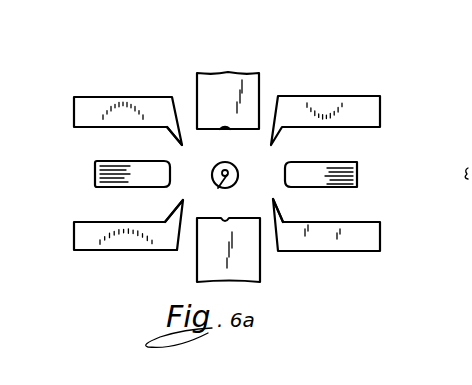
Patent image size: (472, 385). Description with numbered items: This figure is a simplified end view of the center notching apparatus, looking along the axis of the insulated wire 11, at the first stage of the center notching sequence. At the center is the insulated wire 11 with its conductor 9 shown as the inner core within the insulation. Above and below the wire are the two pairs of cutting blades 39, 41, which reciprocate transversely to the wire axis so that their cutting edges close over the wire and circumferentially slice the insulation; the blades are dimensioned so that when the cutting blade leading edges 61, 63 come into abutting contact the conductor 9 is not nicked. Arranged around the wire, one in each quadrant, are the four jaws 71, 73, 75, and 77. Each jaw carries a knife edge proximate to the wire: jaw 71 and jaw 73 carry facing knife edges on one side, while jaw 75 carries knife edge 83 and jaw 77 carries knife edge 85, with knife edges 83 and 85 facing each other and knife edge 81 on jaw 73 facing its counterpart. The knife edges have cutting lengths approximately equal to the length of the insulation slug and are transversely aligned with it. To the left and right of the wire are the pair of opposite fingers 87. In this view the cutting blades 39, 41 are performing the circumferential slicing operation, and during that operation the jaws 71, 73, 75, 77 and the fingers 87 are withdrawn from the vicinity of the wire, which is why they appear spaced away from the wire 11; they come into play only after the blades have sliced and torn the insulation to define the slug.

The jaw 77 is at (85, 108).
The knife edge 85 is at (182, 145).
The jaw 71 is at (351, 113).
The pair of cutting blades 39 is at (261, 86).
The pair of cutting blades 41 is at (310, 30).
The cutting blade leading edge 61 is at (222, 144).
The cutting blade leading edge 63 is at (248, 132).
The fingers 87 is at (95, 171).
The insulated wire 11 is at (251, 172).
The conductor 9 is at (222, 187).
The jaw 75 is at (74, 231).
The knife edge 83 is at (183, 200).
The jaw 73 is at (348, 233).
The knife edge 81 is at (273, 199).